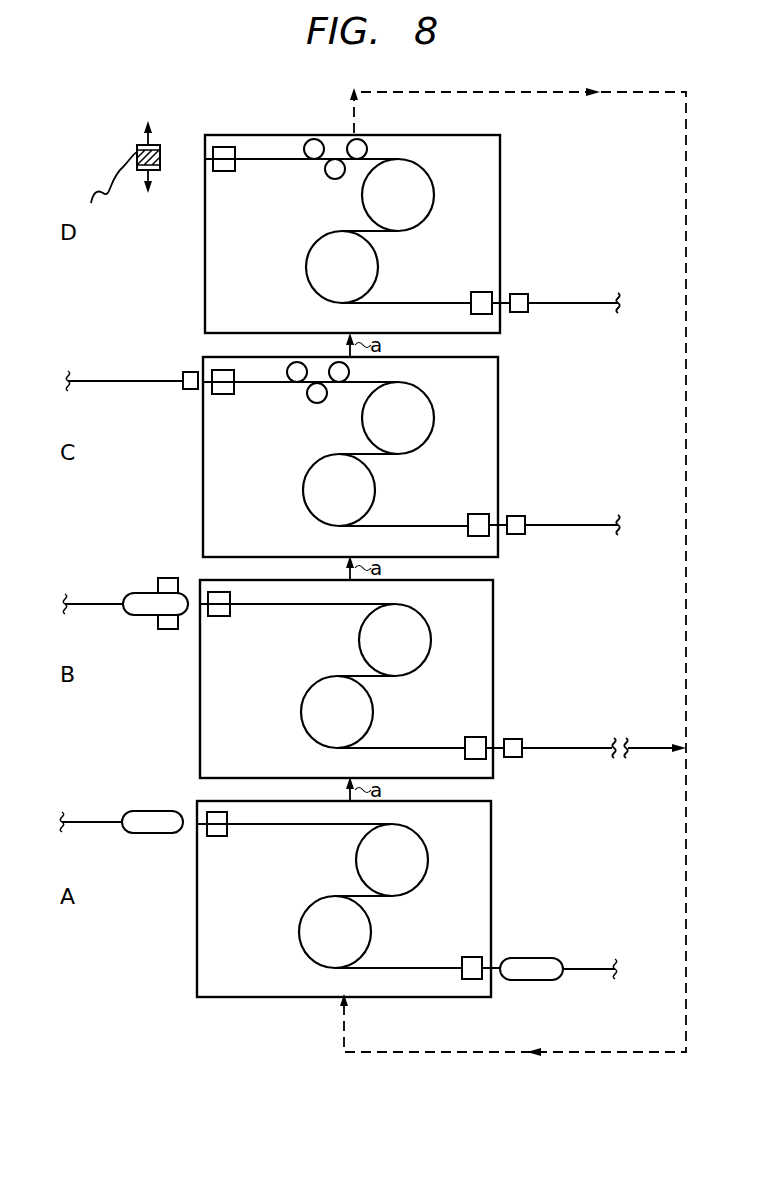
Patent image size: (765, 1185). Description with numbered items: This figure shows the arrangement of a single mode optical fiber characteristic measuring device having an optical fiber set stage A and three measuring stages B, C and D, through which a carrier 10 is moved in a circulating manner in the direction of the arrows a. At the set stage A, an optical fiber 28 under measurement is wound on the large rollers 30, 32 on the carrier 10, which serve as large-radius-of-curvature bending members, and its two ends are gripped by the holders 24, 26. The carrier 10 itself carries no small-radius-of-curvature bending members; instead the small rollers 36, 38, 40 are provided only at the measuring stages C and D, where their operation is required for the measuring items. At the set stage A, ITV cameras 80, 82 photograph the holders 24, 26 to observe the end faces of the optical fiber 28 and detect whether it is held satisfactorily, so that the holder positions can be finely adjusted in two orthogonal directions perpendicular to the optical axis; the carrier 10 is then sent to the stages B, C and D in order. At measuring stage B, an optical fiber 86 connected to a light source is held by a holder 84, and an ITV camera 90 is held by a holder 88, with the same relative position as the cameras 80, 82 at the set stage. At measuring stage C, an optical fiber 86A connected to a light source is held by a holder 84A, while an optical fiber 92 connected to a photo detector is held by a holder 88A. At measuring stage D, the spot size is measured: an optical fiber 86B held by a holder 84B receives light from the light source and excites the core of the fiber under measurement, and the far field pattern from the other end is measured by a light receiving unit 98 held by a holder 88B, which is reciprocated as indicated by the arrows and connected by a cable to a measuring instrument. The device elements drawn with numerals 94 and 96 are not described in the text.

The carrier 10 is at (500, 140).
The holder 24 is at (217, 837).
The holder 26 is at (470, 956).
The optical fiber under measurement 28 is at (300, 824).
The large roller 30 is at (434, 193).
The large roller 32 is at (306, 265).
The small roller 36 is at (286, 370).
The small roller 38 is at (350, 370).
The small roller 40 is at (311, 402).
The ITV camera 80 is at (527, 958).
The ITV camera 82 is at (150, 811).
The holder 84 is at (515, 737).
The holder 84A is at (518, 514).
The holder 84B is at (521, 292).
The optical fiber 86 is at (580, 750).
The optical fiber 86A is at (575, 527).
The optical fiber 86B is at (575, 305).
The holder 88 is at (166, 629).
The holder 88A is at (186, 370).
The holder 88B is at (161, 166).
The ITV camera 90 is at (130, 592).
The optical fiber 92 is at (117, 379).
The movement arrow 94 is at (143, 135).
The connecting line 96 is at (106, 180).
The light receiving unit 98 is at (160, 151).